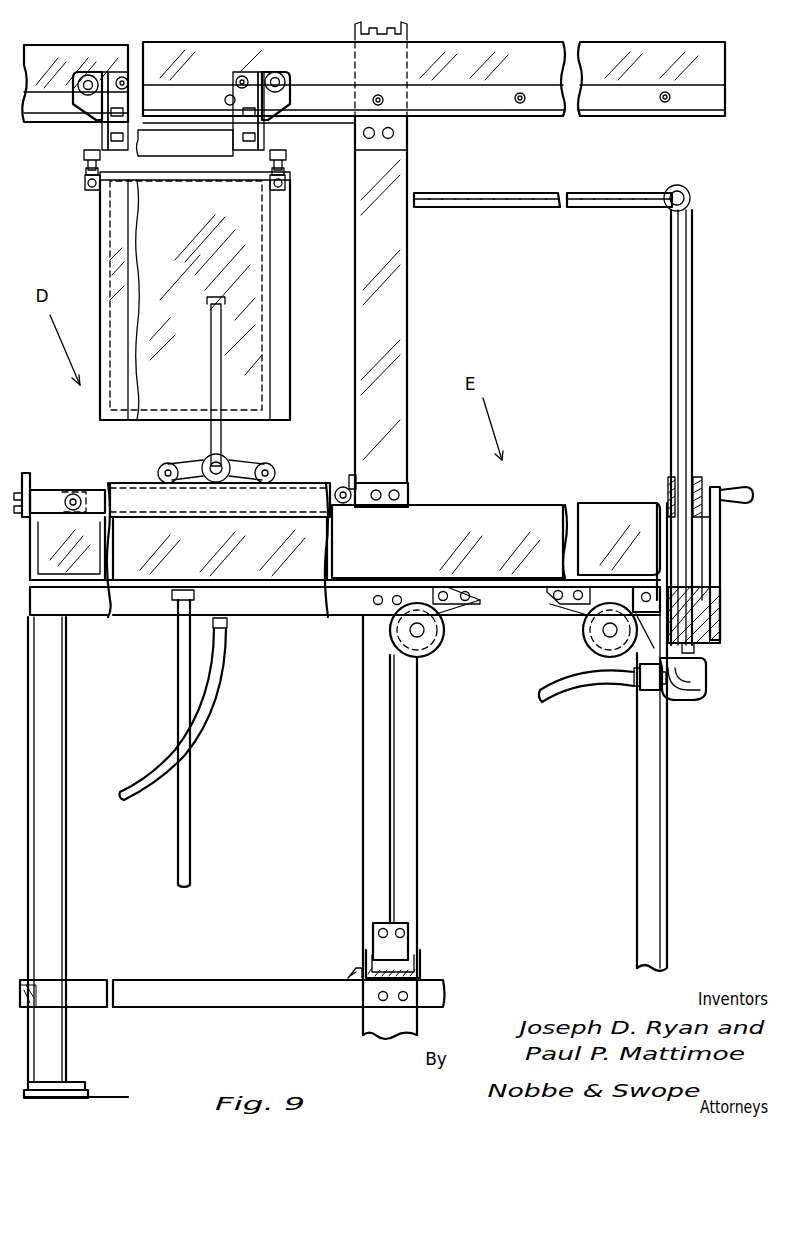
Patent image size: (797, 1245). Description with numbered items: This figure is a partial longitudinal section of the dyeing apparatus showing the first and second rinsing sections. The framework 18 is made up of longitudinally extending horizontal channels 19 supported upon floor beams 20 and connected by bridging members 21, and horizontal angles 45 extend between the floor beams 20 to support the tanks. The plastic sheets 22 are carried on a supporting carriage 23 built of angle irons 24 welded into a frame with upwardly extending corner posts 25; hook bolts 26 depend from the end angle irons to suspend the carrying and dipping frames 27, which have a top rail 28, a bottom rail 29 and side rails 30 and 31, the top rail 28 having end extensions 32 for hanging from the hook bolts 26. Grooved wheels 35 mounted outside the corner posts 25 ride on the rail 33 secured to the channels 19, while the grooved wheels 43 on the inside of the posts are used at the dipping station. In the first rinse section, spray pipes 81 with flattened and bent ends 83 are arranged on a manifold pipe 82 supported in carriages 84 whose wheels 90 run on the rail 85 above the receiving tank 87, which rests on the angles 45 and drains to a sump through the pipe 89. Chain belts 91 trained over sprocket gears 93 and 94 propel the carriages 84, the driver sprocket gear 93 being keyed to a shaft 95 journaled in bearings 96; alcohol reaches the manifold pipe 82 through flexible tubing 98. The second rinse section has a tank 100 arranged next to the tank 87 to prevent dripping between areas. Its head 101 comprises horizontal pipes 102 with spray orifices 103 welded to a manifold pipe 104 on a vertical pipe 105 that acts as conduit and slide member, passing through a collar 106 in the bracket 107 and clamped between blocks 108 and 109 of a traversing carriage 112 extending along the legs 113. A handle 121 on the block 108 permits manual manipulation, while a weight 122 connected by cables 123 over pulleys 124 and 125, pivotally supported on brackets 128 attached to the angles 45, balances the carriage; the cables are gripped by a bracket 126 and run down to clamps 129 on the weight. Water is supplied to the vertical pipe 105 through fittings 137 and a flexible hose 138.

The framework 18 is at (410, 66).
The channels 19 is at (500, 58).
The floor beams 20 is at (380, 266).
The bridging members 21 is at (355, 30).
The plastic sheets 22 is at (137, 291).
The supporting carriage 23 is at (165, 140).
The angle irons 24 is at (84, 154).
The corner posts 25 is at (98, 118).
The hook bolts 26 is at (86, 171).
The carrying and dipping frames 27 is at (100, 230).
The top rail 28 is at (200, 176).
The bottom rail 29 is at (160, 416).
The side rail 30 is at (110, 258).
The side rail 31 is at (270, 244).
The end extensions 32 is at (86, 184).
The rail 33 is at (46, 105).
The grooved wheels 35 is at (119, 77).
The grooved wheels 43 is at (85, 76).
The horizontal angles 45 is at (322, 600).
The spray pipes 81 is at (211, 380).
The manifold pipe 82 is at (209, 458).
The flattened and bent ends 83 is at (219, 300).
The carriages 84 is at (240, 461).
The rail 85 is at (50, 495).
The receiving tank 87 is at (88, 570).
The pipe 89 is at (190, 783).
The wheels 90 is at (160, 470).
The chain belts 91 is at (210, 513).
The sprocket gear 93 is at (334, 496).
The sprocket gear 94 is at (88, 495).
The shaft 95 is at (356, 508).
The bearings 96 is at (348, 478).
The flexible tubing 98 is at (158, 772).
The tank 100 is at (555, 520).
The head 101 is at (576, 395).
The pipes 102 is at (536, 195).
The spray orifices 103 is at (466, 195).
The manifold pipe 104 is at (690, 192).
The vertical pipe 105 is at (693, 304).
The collar 106 is at (703, 478).
The bracket 107 is at (667, 500).
The block 108 is at (722, 616).
The block 109 is at (696, 647).
The traversing carriage 112 is at (724, 596).
The legs 113 is at (655, 822).
The handle 121 is at (738, 492).
The weight 122 is at (420, 949).
The cables 123 is at (514, 606).
The pulley 124 is at (595, 641).
The pulley 125 is at (436, 651).
The bracket 126 is at (665, 692).
The brackets 128 is at (452, 618).
The clamps 129 is at (402, 926).
The fittings 137 is at (706, 686).
The hose 138 is at (590, 690).